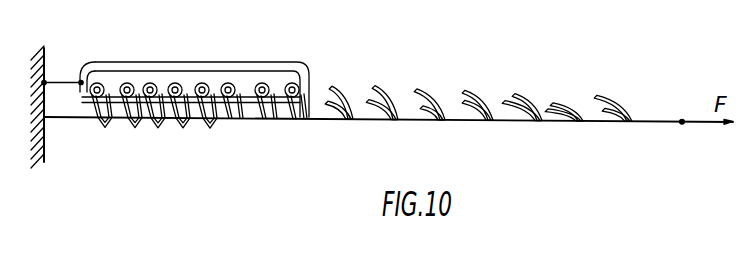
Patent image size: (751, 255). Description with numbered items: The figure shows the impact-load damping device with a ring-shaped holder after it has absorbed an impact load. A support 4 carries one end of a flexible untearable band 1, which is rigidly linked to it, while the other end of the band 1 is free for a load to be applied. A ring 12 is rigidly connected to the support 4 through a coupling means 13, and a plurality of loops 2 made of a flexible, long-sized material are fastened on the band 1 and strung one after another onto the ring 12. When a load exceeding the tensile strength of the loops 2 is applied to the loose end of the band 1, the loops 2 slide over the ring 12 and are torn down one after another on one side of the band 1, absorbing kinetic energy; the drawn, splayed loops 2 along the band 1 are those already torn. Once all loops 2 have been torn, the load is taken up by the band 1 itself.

The flexible untearable band 1 is at (212, 127).
The loops 2 is at (350, 89).
The support 4 is at (46, 142).
The ring 12 is at (194, 69).
The coupling means 13 is at (62, 81).